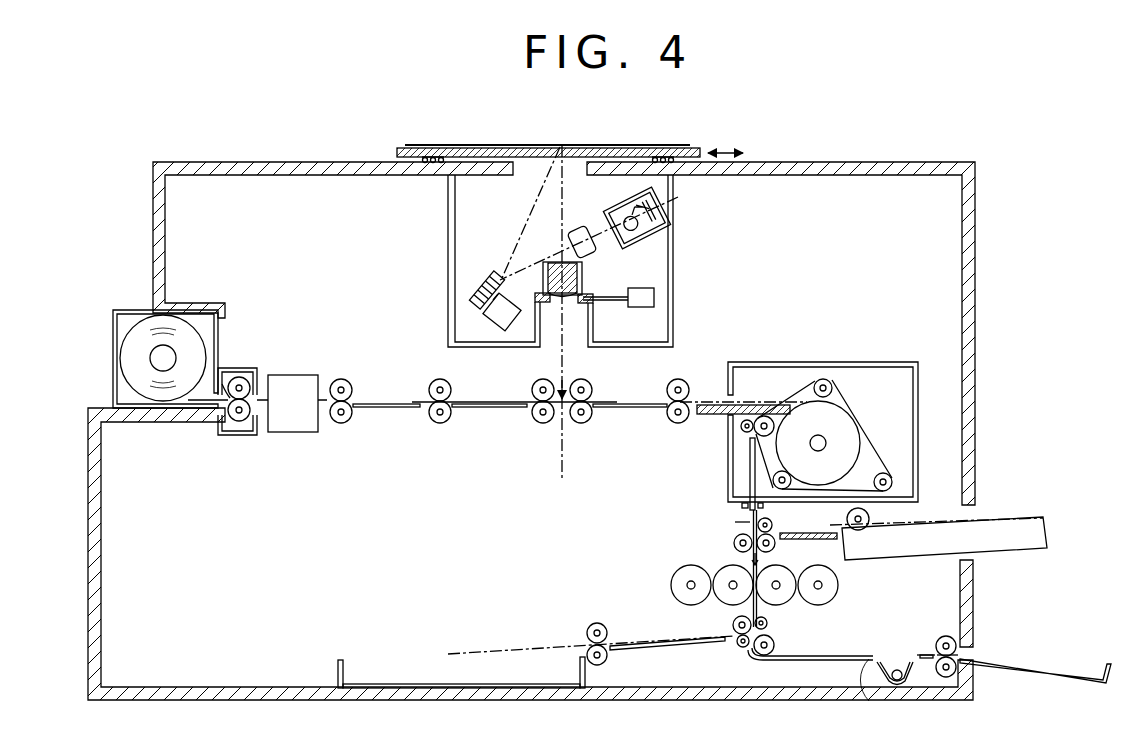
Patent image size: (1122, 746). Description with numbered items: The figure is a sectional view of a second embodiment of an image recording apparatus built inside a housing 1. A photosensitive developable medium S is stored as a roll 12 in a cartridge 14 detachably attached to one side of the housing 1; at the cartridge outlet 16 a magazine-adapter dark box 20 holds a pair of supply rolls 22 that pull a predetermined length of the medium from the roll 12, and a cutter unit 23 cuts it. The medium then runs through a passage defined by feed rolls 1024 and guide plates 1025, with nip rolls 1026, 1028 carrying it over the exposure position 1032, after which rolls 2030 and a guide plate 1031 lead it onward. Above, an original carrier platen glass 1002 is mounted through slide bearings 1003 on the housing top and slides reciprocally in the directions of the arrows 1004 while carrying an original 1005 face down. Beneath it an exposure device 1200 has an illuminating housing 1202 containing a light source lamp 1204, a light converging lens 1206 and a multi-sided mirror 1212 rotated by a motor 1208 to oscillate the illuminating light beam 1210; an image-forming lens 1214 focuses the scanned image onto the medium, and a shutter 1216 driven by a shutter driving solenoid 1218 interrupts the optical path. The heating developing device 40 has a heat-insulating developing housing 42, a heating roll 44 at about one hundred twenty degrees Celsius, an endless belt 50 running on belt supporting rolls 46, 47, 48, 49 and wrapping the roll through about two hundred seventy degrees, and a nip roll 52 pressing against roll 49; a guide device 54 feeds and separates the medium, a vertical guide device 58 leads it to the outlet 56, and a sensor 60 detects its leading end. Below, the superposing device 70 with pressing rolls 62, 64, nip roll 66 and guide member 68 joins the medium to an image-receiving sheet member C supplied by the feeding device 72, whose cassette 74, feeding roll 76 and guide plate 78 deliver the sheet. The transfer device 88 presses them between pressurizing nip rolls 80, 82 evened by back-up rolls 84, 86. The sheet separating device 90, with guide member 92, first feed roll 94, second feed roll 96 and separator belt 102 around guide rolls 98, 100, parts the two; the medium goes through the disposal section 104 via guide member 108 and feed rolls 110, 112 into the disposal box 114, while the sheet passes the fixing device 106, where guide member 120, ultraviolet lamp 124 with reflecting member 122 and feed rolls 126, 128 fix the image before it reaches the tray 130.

The housing 1 is at (88, 480).
The roll 12 is at (128, 370).
The cartridge 14 is at (115, 350).
The outlet 16 is at (222, 397).
The magazine-adapter dark box 20 is at (232, 368).
The photosensitive developable medium supply rolls 22 is at (246, 383).
The cutter unit 23 is at (304, 375).
The heating developing device 40 is at (853, 361).
The heat-insulating developing housing 42 is at (918, 447).
The heating roll 44 is at (880, 450).
The belt supporting roll 46 is at (823, 379).
The belt supporting roll 47 is at (893, 483).
The belt supporting roll 48 is at (773, 481).
The belt supporting roll 49 is at (765, 416).
The endless belt 50 is at (853, 448).
The nip roll 52 is at (741, 427).
The guide device 54 is at (712, 402).
The outlet 56 is at (742, 507).
The vertical guide device 58 is at (750, 466).
The sensor 60 is at (750, 518).
The pressing roll 62 is at (735, 523).
The pressing roll 64 is at (775, 546).
The nip roll 66 is at (772, 524).
The guide member 68 is at (733, 542).
The image-receiving sheet member superposing device 70 is at (725, 553).
The image-receiving sheet member feeding device 72 is at (985, 505).
The image-receiving sheet member feeding cassette 74 is at (1046, 538).
The image-receiving sheet member feeding roll 76 is at (870, 519).
The guide plate 78 is at (812, 540).
The pressurizing nip roll 80 is at (722, 600).
The pressurizing nip roll 82 is at (792, 600).
The back-up roll 84 is at (671, 585).
The back-up roll 86 is at (834, 595).
The transfer device 88 is at (846, 577).
The sheet separating device 90 is at (780, 635).
The guide member 92 is at (748, 560).
The first feed roll 94 is at (732, 625).
The second feed roll 96 is at (775, 647).
The guide roll 98 is at (742, 648).
The guide roll 100 is at (767, 622).
The separator belt 102 is at (750, 653).
The photosensitive medium disposal section 104 is at (516, 645).
The fixing device 106 is at (888, 650).
The guide member 108 is at (690, 646).
The feed roll 110 is at (597, 622).
The feed roll 112 is at (607, 660).
The disposal box 114 is at (588, 672).
The guide member 120 is at (873, 690).
The reflecting member 122 is at (922, 655).
The ultraviolet lamp 124 is at (902, 682).
The feed roll 126 is at (944, 636).
The feed roll 128 is at (950, 678).
The tray 130 is at (1002, 672).
The original carrier platen glass 1002 is at (693, 148).
The slide bearings 1003 is at (443, 151).
The arrows 1004 is at (736, 148).
The original 1005 is at (633, 137).
The feed rolls 1024 is at (346, 424).
The guide plates 1025 is at (393, 408).
The nip roll 1026 is at (539, 424).
The nip roll 1028 is at (583, 424).
The guide plate 1031 is at (636, 408).
The exposure position 1032 is at (575, 429).
The rolls 2030 is at (682, 424).
The exposure device 1200 is at (678, 250).
The illuminating housing 1202 is at (672, 228).
The light source lamp 1204 is at (672, 205).
The light converging lens 1206 is at (596, 248).
The motor 1208 is at (487, 316).
The illuminating light beam 1210 is at (503, 265).
The multi-sided mirror 1212 is at (468, 297).
The image-forming lens 1214 is at (660, 293).
The shutter 1216 is at (568, 306).
The shutter driving solenoid 1218 is at (655, 303).
The photosensitive developable medium S is at (188, 400).
The image-receiving sheet member C is at (990, 510).